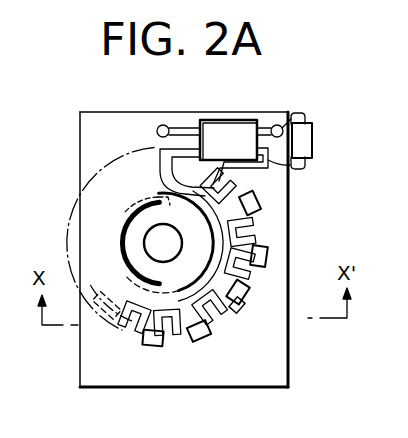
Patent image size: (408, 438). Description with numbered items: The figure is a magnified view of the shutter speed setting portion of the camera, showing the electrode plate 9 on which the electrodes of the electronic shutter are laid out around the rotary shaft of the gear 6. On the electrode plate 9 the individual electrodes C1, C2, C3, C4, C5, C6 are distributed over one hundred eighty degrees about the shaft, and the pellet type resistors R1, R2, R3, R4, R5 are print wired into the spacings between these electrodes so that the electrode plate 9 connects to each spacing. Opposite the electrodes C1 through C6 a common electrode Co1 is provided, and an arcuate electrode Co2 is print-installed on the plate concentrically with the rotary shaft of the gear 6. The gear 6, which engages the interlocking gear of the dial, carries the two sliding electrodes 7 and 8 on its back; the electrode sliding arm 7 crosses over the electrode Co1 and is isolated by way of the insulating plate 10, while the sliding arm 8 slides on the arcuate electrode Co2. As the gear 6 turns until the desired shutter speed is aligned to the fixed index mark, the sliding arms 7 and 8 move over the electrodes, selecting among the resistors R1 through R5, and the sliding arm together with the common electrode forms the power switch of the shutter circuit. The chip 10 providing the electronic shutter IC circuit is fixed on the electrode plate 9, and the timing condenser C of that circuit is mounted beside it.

The gear 6 is at (71, 246).
The sliding electrode 7 is at (115, 280).
The sliding electrode 8 is at (142, 200).
The electrode plate 9 is at (280, 221).
The chip 10 is at (234, 128).
The timing condenser C is at (313, 133).
The electrode C1 is at (134, 326).
The electrode C2 is at (181, 321).
The electrode C3 is at (222, 318).
The electrode C4 is at (268, 292).
The electrode C5 is at (262, 232).
The electrode C6 is at (216, 195).
The common electrode Co1 is at (243, 302).
The arcuate electrode Co2 is at (130, 224).
The pellet type resistor R1 is at (153, 345).
The pellet type resistor R2 is at (203, 336).
The pellet type resistor R3 is at (245, 312).
The pellet type resistor R4 is at (269, 258).
The pellet type resistor R5 is at (262, 206).